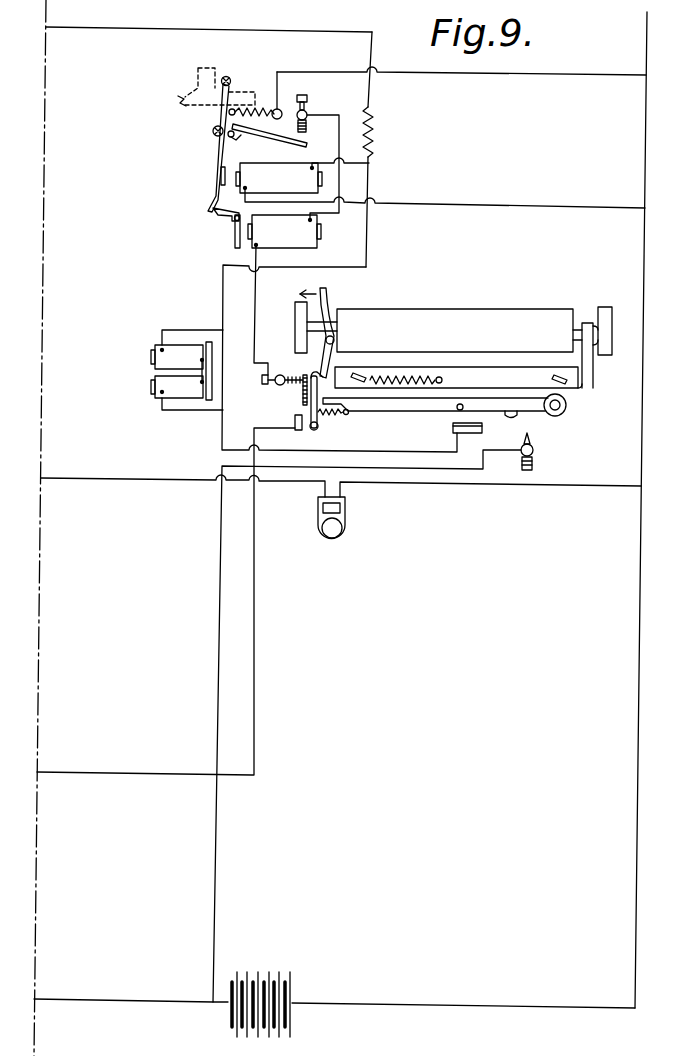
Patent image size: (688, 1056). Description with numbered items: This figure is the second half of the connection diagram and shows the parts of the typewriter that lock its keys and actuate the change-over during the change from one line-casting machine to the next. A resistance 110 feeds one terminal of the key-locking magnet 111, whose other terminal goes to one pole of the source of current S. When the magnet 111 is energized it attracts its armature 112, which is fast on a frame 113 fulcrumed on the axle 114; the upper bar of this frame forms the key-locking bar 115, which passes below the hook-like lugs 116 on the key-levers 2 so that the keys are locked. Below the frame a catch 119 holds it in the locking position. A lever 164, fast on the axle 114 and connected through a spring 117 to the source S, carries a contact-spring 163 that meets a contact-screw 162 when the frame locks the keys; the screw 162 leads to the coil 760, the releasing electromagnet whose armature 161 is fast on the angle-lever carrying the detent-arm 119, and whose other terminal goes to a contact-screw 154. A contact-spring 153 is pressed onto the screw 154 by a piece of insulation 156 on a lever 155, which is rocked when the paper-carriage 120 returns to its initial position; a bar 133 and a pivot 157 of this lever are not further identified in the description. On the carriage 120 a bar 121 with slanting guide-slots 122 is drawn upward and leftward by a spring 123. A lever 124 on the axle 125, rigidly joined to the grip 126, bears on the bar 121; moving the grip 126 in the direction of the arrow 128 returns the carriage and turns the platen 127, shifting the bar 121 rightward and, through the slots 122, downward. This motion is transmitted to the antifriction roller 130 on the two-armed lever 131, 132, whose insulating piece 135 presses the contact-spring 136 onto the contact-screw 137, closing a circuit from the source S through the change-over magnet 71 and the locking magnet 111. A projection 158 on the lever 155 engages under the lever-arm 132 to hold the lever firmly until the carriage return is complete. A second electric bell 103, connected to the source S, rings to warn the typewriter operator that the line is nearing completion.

The key-levers 2 is at (205, 101).
The change-over magnet 71 is at (168, 362).
The second electric bell 103 is at (342, 526).
The resistance 110 is at (384, 132).
The key-locking magnet 111 is at (279, 178).
The armature 112 is at (221, 174).
The frame 113 is at (214, 151).
The axle 114 is at (213, 131).
The key-locking bar 115 is at (234, 74).
The hook-like lugs 116 is at (198, 70).
The spring 117 is at (260, 106).
The catch 119 is at (218, 223).
The paper-carriage 120 is at (588, 372).
The bar 121 is at (470, 367).
The slanting guide-slots 122 is at (558, 374).
The spring 123 is at (418, 367).
The lever 124 is at (336, 344).
The axle 125 is at (325, 340).
The grip 126 is at (327, 300).
The platen 127 is at (458, 311).
The arrow 128 is at (321, 284).
The antifriction roller 130 is at (566, 402).
The two-armed lever 131 is at (571, 410).
The lever-arm 132 is at (343, 414).
The bar 133 is at (457, 409).
The intermediate insulating piece 135 is at (518, 415).
The contact-spring 136 is at (481, 432).
The contact-screw 137 is at (521, 452).
The contact-spring 153 is at (288, 390).
The contact-screw 154 is at (277, 372).
The lever 155 is at (313, 373).
The piece of insulation 156 is at (276, 383).
The pivot 157 is at (325, 425).
The projection 158 is at (311, 400).
The armature 161 is at (235, 244).
The contact-screw 162 is at (318, 113).
The contact-spring 163 is at (269, 141).
The lever 164 is at (242, 145).
The coil 760 is at (284, 231).
The source of current S is at (261, 991).